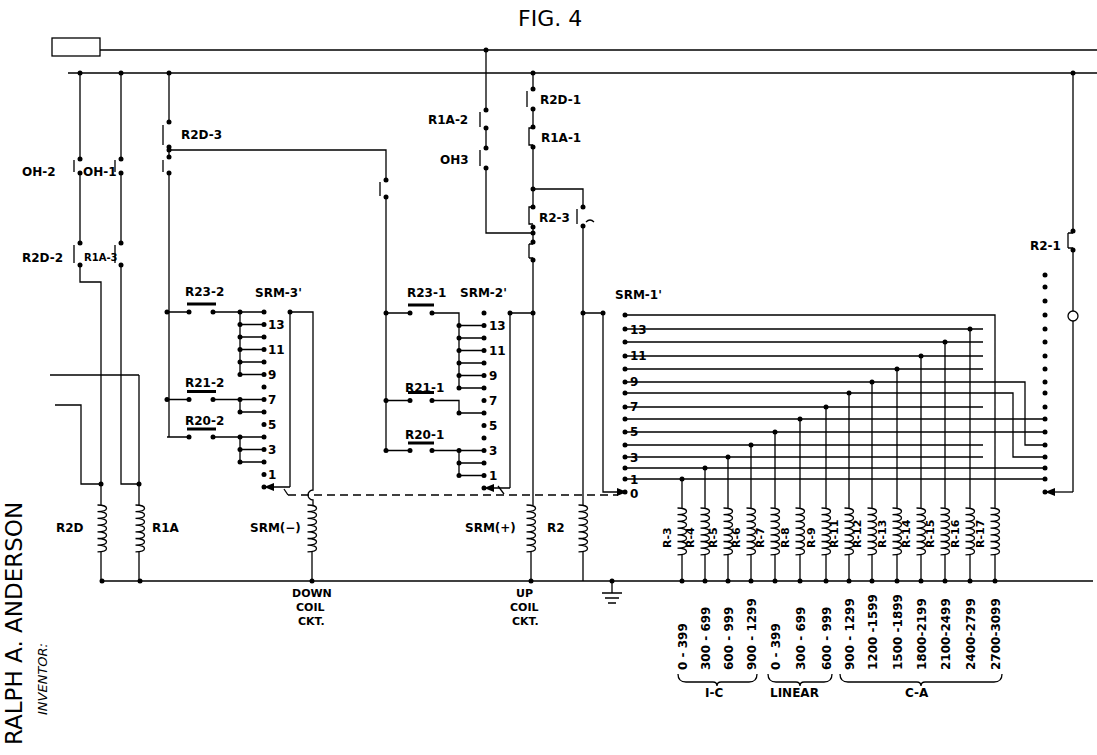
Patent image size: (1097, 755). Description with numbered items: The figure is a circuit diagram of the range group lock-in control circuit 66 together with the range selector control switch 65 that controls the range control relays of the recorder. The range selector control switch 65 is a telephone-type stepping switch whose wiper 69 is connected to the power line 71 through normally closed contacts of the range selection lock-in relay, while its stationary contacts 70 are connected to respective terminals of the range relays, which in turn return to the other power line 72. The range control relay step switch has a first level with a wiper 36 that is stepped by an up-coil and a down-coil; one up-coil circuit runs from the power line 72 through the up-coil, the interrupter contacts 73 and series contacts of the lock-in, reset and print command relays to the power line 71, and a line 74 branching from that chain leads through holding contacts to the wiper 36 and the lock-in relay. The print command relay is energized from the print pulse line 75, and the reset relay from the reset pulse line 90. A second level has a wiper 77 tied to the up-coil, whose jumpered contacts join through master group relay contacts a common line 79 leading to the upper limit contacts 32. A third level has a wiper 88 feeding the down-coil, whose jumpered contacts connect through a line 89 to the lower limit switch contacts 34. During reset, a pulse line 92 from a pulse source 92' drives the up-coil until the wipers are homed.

The pulse source 92' is at (70, 36).
The pulse line 92 is at (598, 32).
The power line 71 is at (928, 74).
The lower limit switch contacts 34 is at (175, 170).
The upper limit contacts 32 is at (390, 191).
The range group lock-in control circuit 66 is at (301, 206).
The common line 79 is at (384, 258).
The common line 89 is at (169, 256).
The wiper 88 is at (287, 373).
The reset pulse line 90 is at (60, 375).
The print pulse line 75 is at (58, 407).
The line 74 is at (548, 189).
The interrupter contacts 73 is at (528, 250).
The wiper 77 is at (510, 390).
The wiper 36 is at (601, 393).
The stationary contacts 70 is at (1042, 317).
The range selector control switch 65 is at (1093, 299).
The wiper 69 is at (1073, 367).
The power line 72 is at (1030, 581).